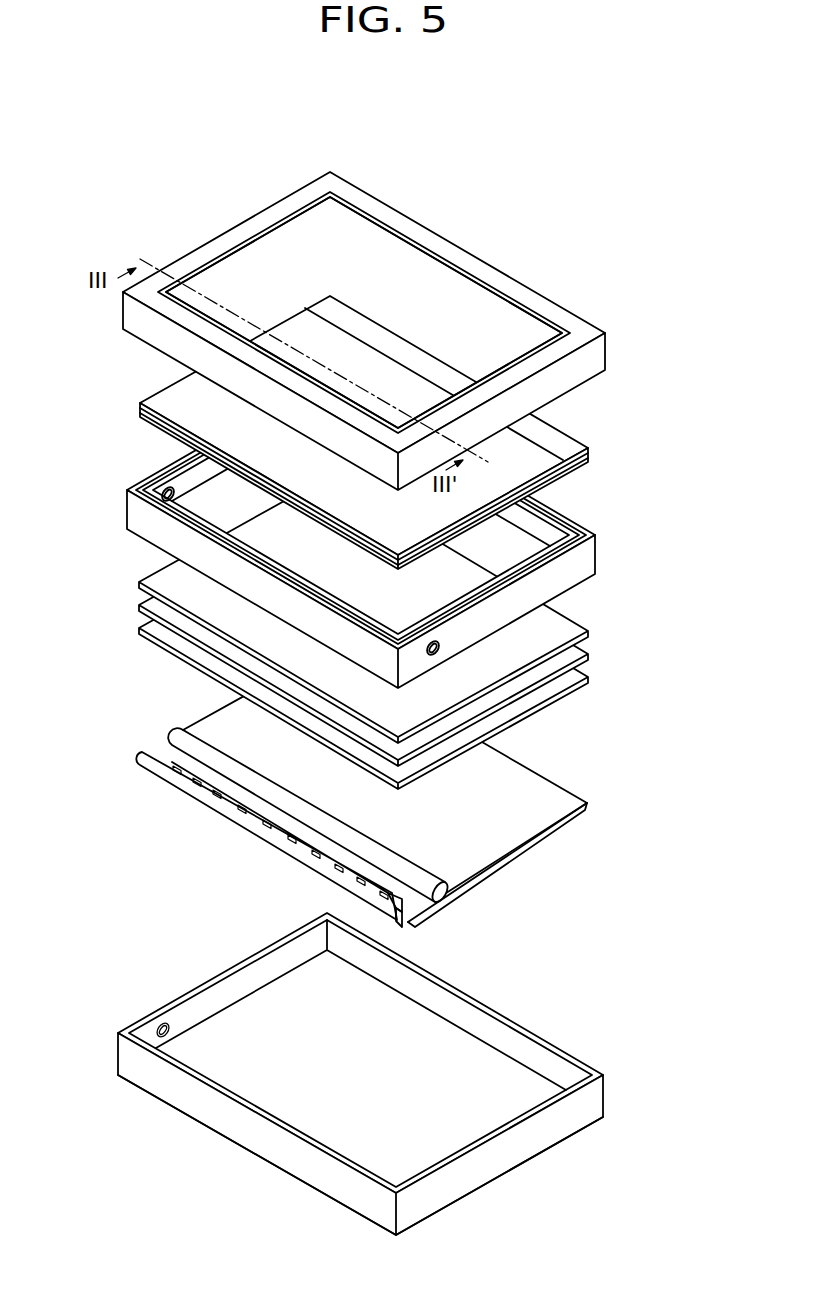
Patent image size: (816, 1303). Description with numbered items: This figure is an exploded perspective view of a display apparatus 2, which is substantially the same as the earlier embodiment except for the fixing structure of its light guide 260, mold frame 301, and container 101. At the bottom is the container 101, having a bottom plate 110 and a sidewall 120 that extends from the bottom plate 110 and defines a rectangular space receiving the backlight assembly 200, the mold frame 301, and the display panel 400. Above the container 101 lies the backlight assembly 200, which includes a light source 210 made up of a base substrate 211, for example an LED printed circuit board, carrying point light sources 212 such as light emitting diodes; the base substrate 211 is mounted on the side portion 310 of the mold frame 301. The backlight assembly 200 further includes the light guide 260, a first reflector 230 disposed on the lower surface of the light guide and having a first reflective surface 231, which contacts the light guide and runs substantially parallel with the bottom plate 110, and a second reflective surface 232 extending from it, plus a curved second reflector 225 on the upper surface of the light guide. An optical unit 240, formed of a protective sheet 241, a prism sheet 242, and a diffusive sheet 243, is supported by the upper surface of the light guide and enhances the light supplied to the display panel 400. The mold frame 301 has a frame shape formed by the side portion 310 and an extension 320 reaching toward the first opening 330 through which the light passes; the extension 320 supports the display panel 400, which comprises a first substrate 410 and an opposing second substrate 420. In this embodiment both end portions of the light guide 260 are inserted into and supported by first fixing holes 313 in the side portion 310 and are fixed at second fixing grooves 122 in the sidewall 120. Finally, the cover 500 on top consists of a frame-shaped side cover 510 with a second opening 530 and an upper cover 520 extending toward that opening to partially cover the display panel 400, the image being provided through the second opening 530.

The display apparatus 2 is at (510, 191).
The container 101 is at (380, 1074).
The bottom plate 110 is at (517, 1094).
The sidewall 120 is at (508, 1145).
The second fixing grooves 122 is at (161, 1022).
The backlight assembly 200 is at (447, 724).
The light source 210 is at (422, 862).
The base substrate 211 is at (402, 930).
The point light sources 212 is at (400, 918).
The second reflector 225 is at (420, 877).
The first reflector 230 is at (558, 865).
The first reflective surface 231 is at (427, 916).
The second reflective surface 232 is at (453, 892).
The optical unit 240 is at (429, 632).
The protective sheet 241 is at (655, 700).
The prism sheet 242 is at (590, 656).
The diffusive sheet 243 is at (590, 680).
The light guide 260 is at (440, 872).
The mold frame 301 is at (389, 539).
The side portion 310 is at (563, 536).
The first fixing holes 313 is at (167, 487).
The extension 320 is at (570, 540).
The first opening 330 is at (520, 557).
The display panel 400 is at (429, 432).
The first substrate 410 is at (565, 452).
The second substrate 420 is at (530, 457).
The cover 500 is at (421, 331).
The side cover 510 is at (604, 352).
The upper cover 520 is at (504, 287).
The second opening 530 is at (512, 327).